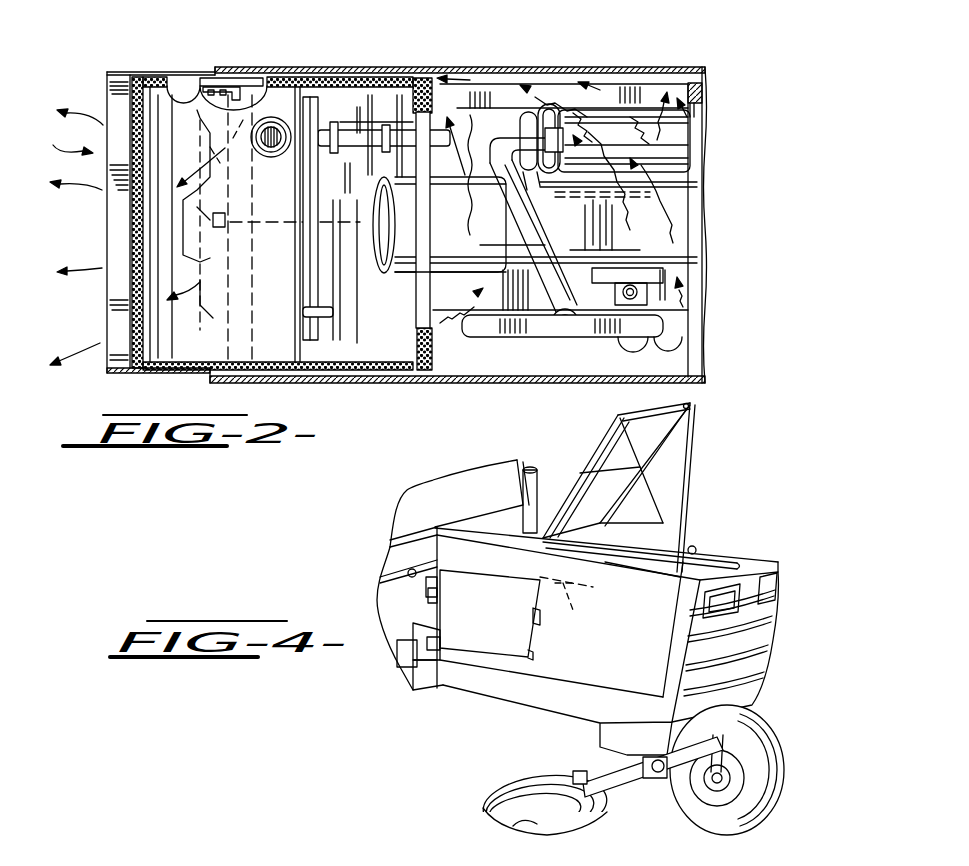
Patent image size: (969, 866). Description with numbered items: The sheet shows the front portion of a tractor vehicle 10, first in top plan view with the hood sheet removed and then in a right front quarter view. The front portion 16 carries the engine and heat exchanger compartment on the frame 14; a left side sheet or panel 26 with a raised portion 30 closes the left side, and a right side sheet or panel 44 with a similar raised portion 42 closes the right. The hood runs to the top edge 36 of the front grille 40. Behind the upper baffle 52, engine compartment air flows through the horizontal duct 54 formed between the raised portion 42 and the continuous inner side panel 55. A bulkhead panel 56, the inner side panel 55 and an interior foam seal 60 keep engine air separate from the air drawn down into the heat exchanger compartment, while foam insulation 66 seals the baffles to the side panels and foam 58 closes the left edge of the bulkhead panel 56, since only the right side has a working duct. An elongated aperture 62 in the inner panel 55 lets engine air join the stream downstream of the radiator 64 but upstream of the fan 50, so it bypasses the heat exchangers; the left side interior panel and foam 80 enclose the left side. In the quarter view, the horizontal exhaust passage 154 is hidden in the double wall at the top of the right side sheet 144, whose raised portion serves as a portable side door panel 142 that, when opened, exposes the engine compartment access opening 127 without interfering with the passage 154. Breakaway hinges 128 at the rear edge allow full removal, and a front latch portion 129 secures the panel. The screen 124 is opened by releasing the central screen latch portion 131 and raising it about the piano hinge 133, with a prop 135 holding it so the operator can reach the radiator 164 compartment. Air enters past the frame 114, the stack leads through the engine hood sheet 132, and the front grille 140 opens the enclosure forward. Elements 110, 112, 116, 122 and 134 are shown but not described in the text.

In FIG. 2, the tractor vehicle 10 is at (728, 152).
In FIG. 2, the frame 14 is at (648, 97).
In FIG. 2, the front portion of the tractor 16 is at (132, 237).
In FIG. 2, the left side sheet or panel 26 is at (140, 373).
In FIG. 2, the raised portion 30 is at (207, 380).
In FIG. 2, the top edge 36 is at (122, 93).
In FIG. 2, the front grille 40 is at (110, 287).
In FIG. 2, the raised portion 42 is at (410, 70).
In FIG. 2, the right side sheet or panel 44 is at (338, 68).
In FIG. 2, the fan 50 is at (180, 363).
In FIG. 2, the upper baffle 52 is at (273, 340).
In FIG. 2, the horizontal duct 54 is at (318, 78).
In FIG. 2, the inner side panel 55 is at (167, 85).
In FIG. 2, the bulkhead panel 56 is at (410, 333).
In FIG. 2, the foam 58 is at (240, 363).
In FIG. 2, the interior foam seal 60 is at (374, 80).
In FIG. 2, the elongated aperture 62 is at (238, 85).
In FIG. 2, the radiator 64 is at (288, 350).
In FIG. 2, the foam insulation 66 is at (418, 82).
In FIG. 2, the left side interior panel and foam 80 is at (390, 333).
In FIG. 4, the tractor 110 is at (820, 547).
In FIG. 4, the exhaust stack 112 is at (523, 457).
In FIG. 4, the frame 114 is at (453, 677).
In FIG. 4, the hood 116 is at (732, 531).
In FIG. 4, the front wheel 122 is at (693, 827).
In FIG. 4, the screen 124 is at (657, 438).
In FIG. 4, the engine compartment access opening 127 is at (525, 653).
In FIG. 4, the breakaway hinges 128 is at (437, 643).
In FIG. 4, the front latch portion 129 is at (527, 617).
In FIG. 4, the central screen latch portion 131 is at (688, 400).
In FIG. 4, the engine hood sheet 132 is at (543, 517).
In FIG. 4, the piano hinge 133 is at (598, 528).
In FIG. 4, the air intake duct 134 is at (457, 493).
In FIG. 4, the prop 135 is at (670, 510).
In FIG. 4, the front grille 140 is at (747, 650).
In FIG. 4, the portable side door panel 142 is at (377, 610).
In FIG. 4, the right side sheet 144 is at (577, 673).
In FIG. 4, the horizontal exhaust passage 154 is at (568, 611).
In FIG. 4, the radiator 164 is at (660, 567).